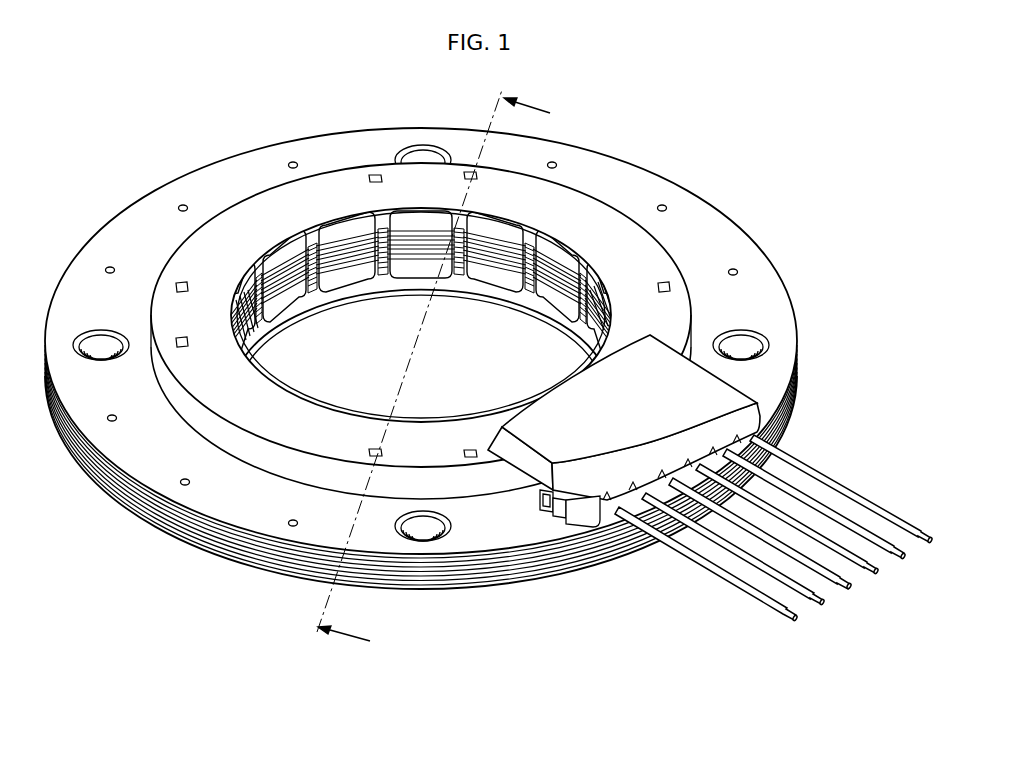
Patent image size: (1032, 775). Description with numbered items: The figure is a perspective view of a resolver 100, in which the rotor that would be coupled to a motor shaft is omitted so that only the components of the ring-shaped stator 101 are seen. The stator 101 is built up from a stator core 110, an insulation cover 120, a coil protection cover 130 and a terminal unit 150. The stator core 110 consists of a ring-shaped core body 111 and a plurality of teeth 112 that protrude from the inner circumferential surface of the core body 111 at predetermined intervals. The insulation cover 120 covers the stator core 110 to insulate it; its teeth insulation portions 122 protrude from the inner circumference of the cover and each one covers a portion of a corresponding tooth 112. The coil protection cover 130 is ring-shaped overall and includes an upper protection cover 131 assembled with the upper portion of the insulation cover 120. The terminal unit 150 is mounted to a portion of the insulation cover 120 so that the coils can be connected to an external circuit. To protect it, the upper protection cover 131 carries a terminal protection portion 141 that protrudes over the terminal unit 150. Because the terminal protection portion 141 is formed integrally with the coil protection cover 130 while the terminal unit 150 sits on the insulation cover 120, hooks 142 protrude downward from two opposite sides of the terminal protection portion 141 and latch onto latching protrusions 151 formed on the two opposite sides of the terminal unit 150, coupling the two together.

The resolver 100 is at (476, 372).
The stator 101 is at (476, 372).
The stator core 110 is at (408, 358).
The core body 111 is at (206, 186).
The teeth 112 is at (270, 272).
The insulation cover 120 is at (463, 238).
The teeth insulation portions 122 is at (497, 227).
The coil protection cover 130 is at (514, 331).
The upper protection cover 131 is at (643, 255).
The terminal protection portion 141 is at (707, 395).
The hooks 142 is at (557, 518).
The terminal unit 150 is at (590, 524).
The latching protrusions 151 is at (543, 507).